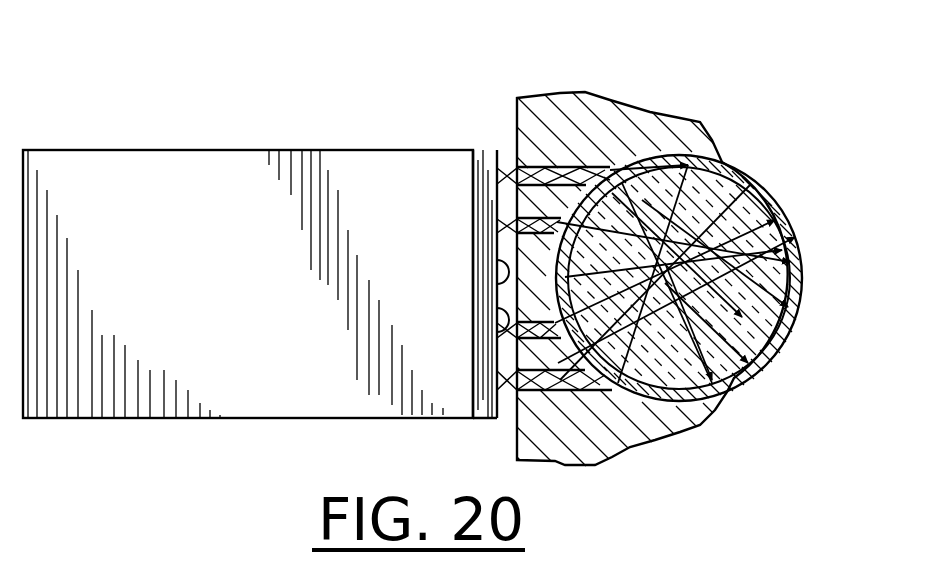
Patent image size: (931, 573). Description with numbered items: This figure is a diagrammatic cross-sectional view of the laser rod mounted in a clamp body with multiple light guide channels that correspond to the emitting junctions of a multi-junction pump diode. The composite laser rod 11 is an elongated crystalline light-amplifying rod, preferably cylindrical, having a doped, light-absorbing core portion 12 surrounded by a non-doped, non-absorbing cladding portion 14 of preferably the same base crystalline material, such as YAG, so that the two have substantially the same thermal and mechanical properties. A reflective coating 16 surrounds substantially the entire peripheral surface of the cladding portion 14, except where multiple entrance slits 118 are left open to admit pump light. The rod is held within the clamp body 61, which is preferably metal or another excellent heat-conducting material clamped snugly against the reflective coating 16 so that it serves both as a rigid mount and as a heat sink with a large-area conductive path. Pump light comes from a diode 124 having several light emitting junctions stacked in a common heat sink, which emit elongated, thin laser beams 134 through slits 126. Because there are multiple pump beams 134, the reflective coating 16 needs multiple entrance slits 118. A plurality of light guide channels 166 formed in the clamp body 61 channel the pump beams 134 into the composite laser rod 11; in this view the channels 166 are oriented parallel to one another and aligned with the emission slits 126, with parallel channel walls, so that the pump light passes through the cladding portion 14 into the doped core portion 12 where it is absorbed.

The composite laser rod 11 is at (758, 180).
The doped core portion 12 is at (779, 238).
The cladding portion 14 is at (783, 270).
The reflective coating 16 is at (775, 216).
The clamp body 61 is at (520, 93).
The entrance slits 118 is at (600, 165).
The diode 124 is at (285, 150).
The slits 126 is at (492, 312).
The laser beams 134 is at (505, 235).
The light guide channels 166 is at (520, 388).